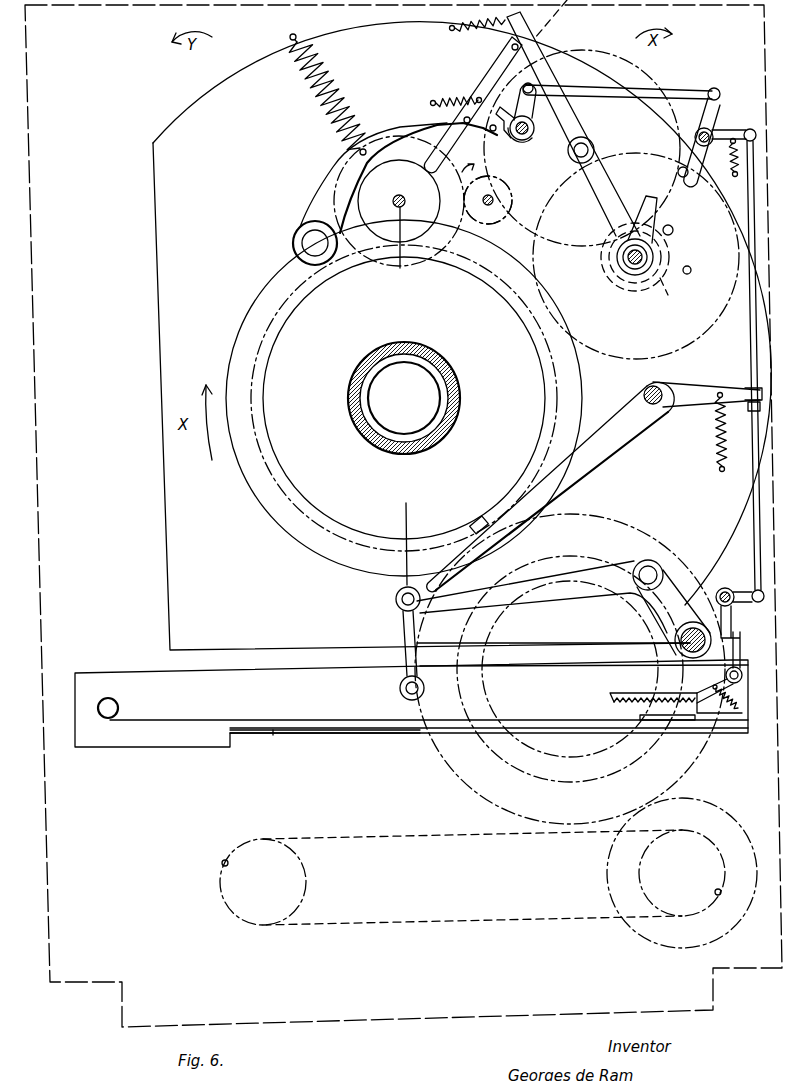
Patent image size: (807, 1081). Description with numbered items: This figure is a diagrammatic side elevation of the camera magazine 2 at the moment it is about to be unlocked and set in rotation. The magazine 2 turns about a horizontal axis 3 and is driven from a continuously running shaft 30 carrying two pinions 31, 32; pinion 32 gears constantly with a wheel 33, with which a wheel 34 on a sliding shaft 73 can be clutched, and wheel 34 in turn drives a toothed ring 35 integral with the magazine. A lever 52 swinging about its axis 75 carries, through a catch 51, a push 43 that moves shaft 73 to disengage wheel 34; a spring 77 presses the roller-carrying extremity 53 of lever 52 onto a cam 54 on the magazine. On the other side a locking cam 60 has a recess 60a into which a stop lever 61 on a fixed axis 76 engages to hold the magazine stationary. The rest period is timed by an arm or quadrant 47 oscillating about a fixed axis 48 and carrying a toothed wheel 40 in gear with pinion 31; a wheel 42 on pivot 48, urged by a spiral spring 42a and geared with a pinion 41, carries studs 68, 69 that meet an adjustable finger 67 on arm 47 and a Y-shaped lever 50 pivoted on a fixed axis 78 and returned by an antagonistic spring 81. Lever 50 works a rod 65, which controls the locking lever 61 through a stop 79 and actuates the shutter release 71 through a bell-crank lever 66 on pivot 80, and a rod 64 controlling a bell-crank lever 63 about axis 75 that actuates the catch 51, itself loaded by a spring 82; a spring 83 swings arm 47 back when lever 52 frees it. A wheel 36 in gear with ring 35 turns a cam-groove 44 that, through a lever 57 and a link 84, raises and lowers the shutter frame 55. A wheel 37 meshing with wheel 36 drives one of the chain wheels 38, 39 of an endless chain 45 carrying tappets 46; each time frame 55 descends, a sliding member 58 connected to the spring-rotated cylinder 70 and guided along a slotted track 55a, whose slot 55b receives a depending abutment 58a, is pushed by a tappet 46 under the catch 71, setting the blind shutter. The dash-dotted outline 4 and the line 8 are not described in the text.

The magazine 2 is at (162, 283).
The horizontal axis 3 is at (404, 398).
The casing outline 4 is at (30, 195).
The section line 8 is at (488, 292).
The shaft 30 is at (500, 178).
The pinion 31 is at (490, 206).
The pinion 32 is at (512, 195).
The wheel 33 is at (460, 237).
The wheel 34 is at (439, 202).
The toothed ring 35 is at (258, 342).
The wheel 36 is at (702, 770).
The wheel 37 is at (740, 818).
The chain wheel 38 is at (643, 874).
The chain wheel 39 is at (307, 882).
The toothed wheel 40 is at (607, 56).
The pinion 41 is at (590, 140).
The wheel 42 is at (712, 330).
The spiral spring 42a is at (676, 294).
The push 43 is at (460, 142).
The cam-groove 44 is at (582, 548).
The endless chain 45 is at (398, 832).
The driving tappets 46 is at (734, 880).
The arm or quadrant 47 is at (592, 204).
The fixed axis 48 is at (635, 261).
The Y-shaped lever 50 is at (690, 145).
The catch 51 is at (494, 132).
The lever 52 is at (330, 195).
The roller extremity 53 is at (292, 240).
The cam 54 is at (252, 307).
The shutter frame 55 is at (140, 673).
The slotted track 55a is at (248, 735).
The slot 55b is at (310, 735).
The lever 57 is at (567, 596).
The sliding member 58 is at (660, 720).
The depending abutment 58a is at (735, 725).
The locking cam 60 is at (547, 390).
The recess 60a is at (476, 518).
The stop lever 61 is at (633, 420).
The bell-crank lever 63 is at (500, 106).
The rod 64 is at (698, 90).
The rod 65 is at (746, 189).
The bell-crank lever 66 is at (748, 606).
The finger 67 is at (650, 208).
The stud 68 is at (687, 266).
The stud 69 is at (677, 172).
The spring-rotated cylinder 70 is at (115, 702).
The catch 71 is at (324, 94).
The sliding shaft 73 is at (396, 198).
The axis of oscillation 75 is at (536, 138).
The fixed axis 76 is at (646, 388).
The spring 77 is at (635, 700).
The fixed axis 78 is at (701, 128).
The stop 79 is at (745, 404).
The pivot 80 is at (737, 578).
The antagonistic spring 81 is at (723, 158).
The spring 82 is at (447, 97).
The spring 83 is at (475, 22).
The link 84 is at (402, 630).